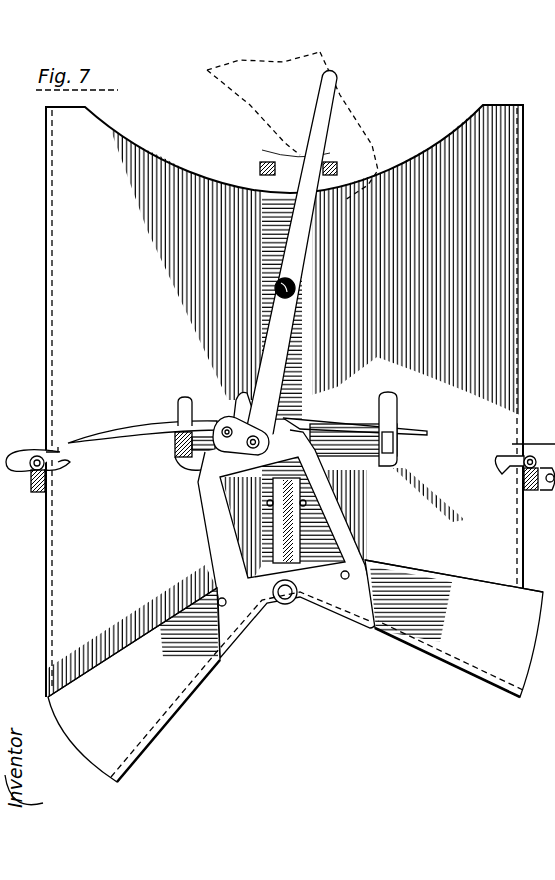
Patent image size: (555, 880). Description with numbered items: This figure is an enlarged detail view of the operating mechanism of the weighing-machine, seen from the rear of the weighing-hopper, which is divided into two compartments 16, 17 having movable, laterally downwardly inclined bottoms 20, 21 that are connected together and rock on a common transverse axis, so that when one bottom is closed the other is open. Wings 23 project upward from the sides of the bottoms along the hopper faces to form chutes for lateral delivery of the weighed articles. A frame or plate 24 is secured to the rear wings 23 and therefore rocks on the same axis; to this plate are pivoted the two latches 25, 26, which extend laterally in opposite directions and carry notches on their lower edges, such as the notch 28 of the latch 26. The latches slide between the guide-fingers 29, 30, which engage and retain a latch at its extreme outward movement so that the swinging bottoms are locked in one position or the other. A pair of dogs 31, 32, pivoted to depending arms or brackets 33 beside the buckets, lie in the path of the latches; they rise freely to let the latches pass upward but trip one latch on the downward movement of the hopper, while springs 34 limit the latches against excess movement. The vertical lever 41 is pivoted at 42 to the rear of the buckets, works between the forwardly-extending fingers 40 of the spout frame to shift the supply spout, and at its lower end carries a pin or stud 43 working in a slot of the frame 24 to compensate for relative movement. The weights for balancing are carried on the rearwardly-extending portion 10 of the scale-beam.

The rearwardly-extending portion 10 is at (305, 507).
The compartment 16 is at (416, 313).
The compartment 17 is at (284, 401).
The bottom 20 is at (446, 660).
The bottom 21 is at (176, 714).
The wings 23 is at (295, 628).
The frame or plate 24 is at (323, 528).
The latch 25 is at (144, 437).
The latch 26 is at (346, 417).
The notch 28 is at (286, 447).
The guide-finger 29 is at (177, 402).
The guide-finger 30 is at (393, 408).
The dog 31 is at (62, 472).
The dog 32 is at (508, 470).
The depending arm or bracket 33 is at (533, 433).
The spring 34 is at (22, 452).
The forwardly-extending fingers 40 is at (262, 162).
The vertical lever 41 is at (293, 255).
The pivot 42 is at (300, 291).
The pin or stud 43 is at (248, 445).